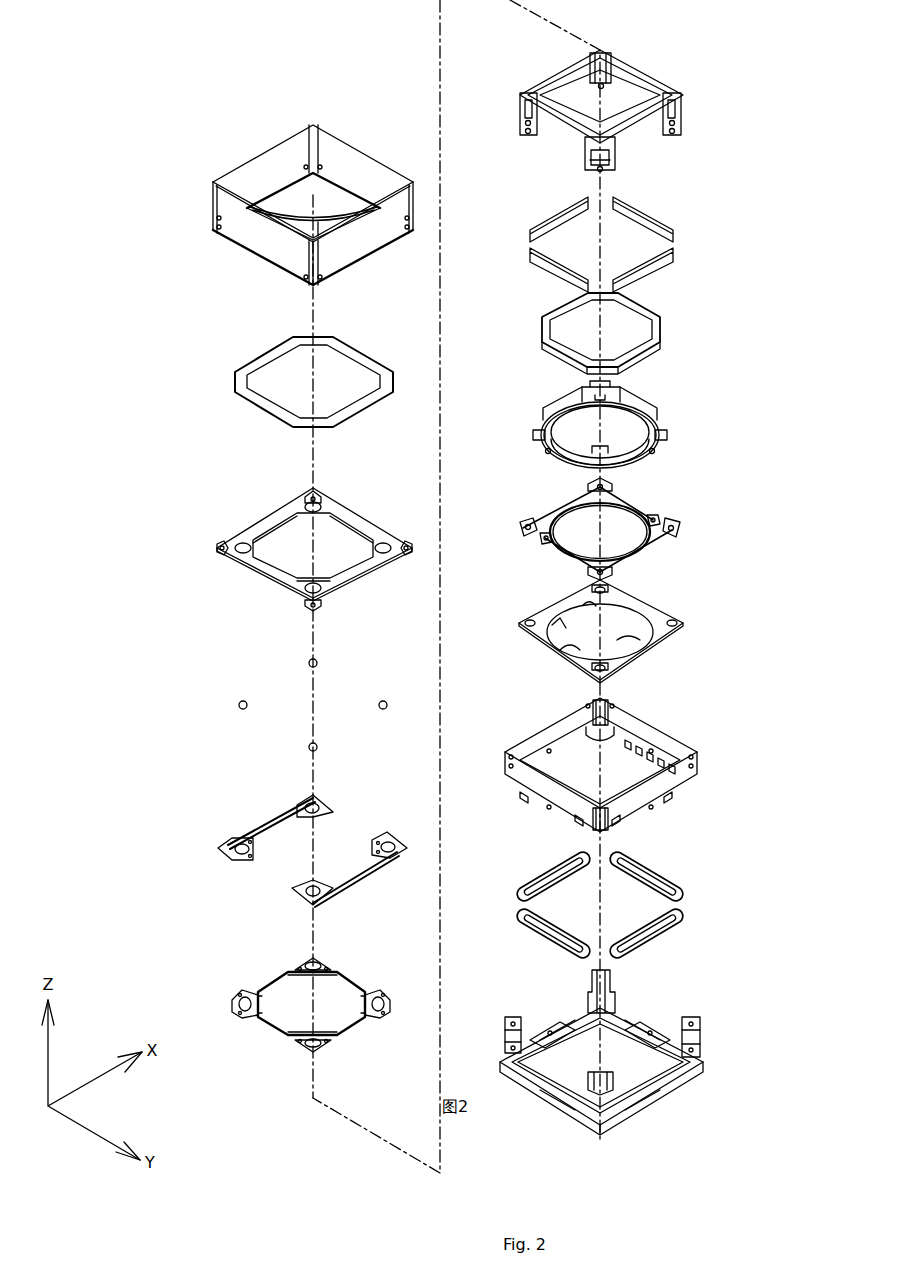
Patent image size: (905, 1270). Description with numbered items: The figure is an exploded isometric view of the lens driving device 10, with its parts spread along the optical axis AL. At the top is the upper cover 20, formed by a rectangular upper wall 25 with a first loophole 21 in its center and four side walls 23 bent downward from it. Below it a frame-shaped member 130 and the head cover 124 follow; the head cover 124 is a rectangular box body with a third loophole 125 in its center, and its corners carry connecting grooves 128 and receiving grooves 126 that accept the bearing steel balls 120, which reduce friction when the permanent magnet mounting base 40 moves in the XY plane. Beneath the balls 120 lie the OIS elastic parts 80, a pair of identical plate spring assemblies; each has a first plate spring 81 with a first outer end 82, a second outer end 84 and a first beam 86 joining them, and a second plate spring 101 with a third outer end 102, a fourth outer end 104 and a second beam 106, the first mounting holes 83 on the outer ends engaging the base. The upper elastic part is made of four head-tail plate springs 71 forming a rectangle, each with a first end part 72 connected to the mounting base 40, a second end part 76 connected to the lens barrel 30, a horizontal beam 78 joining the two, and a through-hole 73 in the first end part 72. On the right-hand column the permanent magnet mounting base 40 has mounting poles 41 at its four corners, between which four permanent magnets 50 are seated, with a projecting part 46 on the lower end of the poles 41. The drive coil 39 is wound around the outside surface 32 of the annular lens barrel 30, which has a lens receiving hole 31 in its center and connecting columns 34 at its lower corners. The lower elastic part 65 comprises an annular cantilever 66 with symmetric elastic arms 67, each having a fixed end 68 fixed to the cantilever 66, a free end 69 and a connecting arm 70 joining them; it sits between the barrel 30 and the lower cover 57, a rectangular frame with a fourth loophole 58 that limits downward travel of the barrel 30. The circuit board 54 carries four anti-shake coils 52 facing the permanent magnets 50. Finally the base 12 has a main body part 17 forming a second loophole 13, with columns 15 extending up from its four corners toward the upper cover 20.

The lens driving device 10 is at (275, 70).
The upper cover 20 is at (272, 202).
The first loophole 21 is at (290, 195).
The side walls 23 is at (365, 175).
The upper wall 25 is at (322, 230).
The optical axis AL is at (313, 318).
The frame member 130 is at (253, 368).
The head cover 124 is at (299, 540).
The third loophole 125 is at (290, 555).
The receiving groove 126 is at (243, 545).
The connecting grooves 128 is at (318, 496).
The bearing balls 120 is at (309, 663).
The OIS elastic parts 80 is at (257, 831).
The first plate spring 81 is at (268, 801).
The first outer end 82 is at (228, 842).
The first mounting hole 83 is at (320, 800).
The second outer end 84 is at (310, 800).
The first beam 86 is at (273, 820).
The second plate spring 101 is at (312, 874).
The third outer end 102 is at (243, 862).
The fourth outer end 104 is at (330, 812).
The second beam 106 is at (334, 855).
The head-tail plate spring 71 is at (422, 823).
The first end part 72 is at (328, 965).
The through-hole 73 is at (240, 1008).
The second end part 76 is at (310, 963).
The horizontal beam 78 is at (360, 988).
The permanent magnet mounting base 40 is at (593, 103).
The mounting poles 41 is at (593, 63).
The projecting part 46 is at (527, 130).
The permanent magnet 50 is at (670, 228).
The drive coil 39 is at (660, 325).
The lens barrel 30 is at (616, 429).
The lens receiving hole 31 is at (580, 432).
The outside surface 32 is at (655, 412).
The connecting column 34 is at (548, 460).
The lower elastic parts 65 is at (594, 514).
The annular cantilever 66 is at (675, 532).
The elastic arm 67 is at (560, 560).
The fixed end 68 is at (665, 515).
The free end 69 is at (585, 487).
The upper elastic parts 70 is at (625, 492).
The lower cover 57 is at (637, 647).
The fourth loophole 58 is at (620, 640).
The circuit board 54 is at (708, 762).
The anti-shake coil 52 is at (548, 870).
The base 12 is at (617, 1072).
The second loophole 13 is at (620, 1055).
The column 15 is at (590, 982).
The main body part 17 is at (560, 1085).